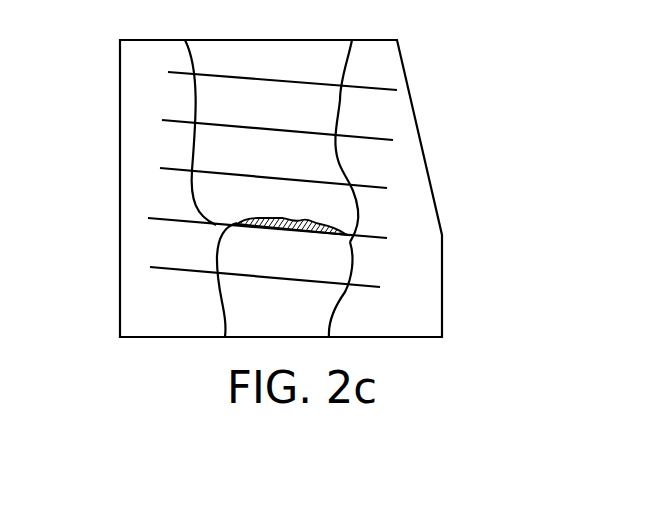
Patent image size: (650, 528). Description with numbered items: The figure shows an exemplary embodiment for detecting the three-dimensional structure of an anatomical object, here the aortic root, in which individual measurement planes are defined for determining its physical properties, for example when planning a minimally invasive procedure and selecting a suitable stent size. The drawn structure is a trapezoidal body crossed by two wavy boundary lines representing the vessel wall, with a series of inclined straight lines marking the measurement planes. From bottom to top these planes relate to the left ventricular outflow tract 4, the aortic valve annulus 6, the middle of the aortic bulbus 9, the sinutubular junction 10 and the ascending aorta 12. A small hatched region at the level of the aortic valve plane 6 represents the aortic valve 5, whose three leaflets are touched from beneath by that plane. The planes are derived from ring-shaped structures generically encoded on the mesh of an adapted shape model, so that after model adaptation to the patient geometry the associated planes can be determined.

The left ventricular outflow tract 4 is at (150, 267).
The aortic valve plane 6 is at (148, 218).
The middle of the aortic bulbus 9 is at (160, 168).
The sinutubular junction 10 is at (162, 120).
The ascending aorta 12 is at (168, 72).
The aortic valve 5 is at (330, 226).